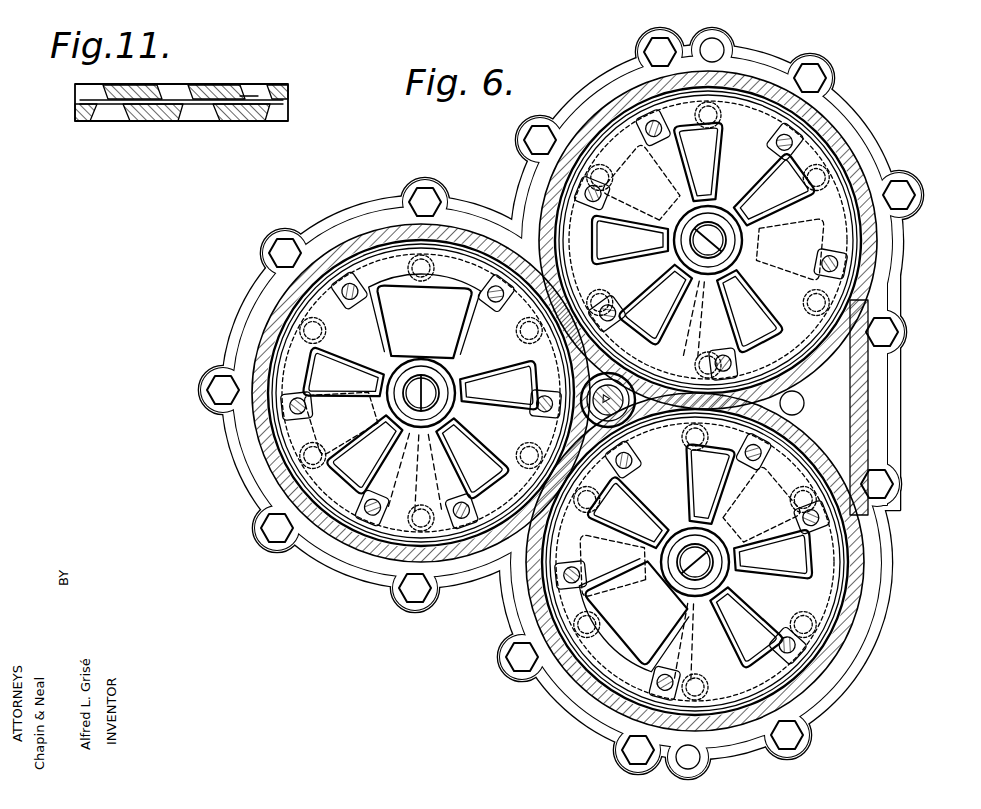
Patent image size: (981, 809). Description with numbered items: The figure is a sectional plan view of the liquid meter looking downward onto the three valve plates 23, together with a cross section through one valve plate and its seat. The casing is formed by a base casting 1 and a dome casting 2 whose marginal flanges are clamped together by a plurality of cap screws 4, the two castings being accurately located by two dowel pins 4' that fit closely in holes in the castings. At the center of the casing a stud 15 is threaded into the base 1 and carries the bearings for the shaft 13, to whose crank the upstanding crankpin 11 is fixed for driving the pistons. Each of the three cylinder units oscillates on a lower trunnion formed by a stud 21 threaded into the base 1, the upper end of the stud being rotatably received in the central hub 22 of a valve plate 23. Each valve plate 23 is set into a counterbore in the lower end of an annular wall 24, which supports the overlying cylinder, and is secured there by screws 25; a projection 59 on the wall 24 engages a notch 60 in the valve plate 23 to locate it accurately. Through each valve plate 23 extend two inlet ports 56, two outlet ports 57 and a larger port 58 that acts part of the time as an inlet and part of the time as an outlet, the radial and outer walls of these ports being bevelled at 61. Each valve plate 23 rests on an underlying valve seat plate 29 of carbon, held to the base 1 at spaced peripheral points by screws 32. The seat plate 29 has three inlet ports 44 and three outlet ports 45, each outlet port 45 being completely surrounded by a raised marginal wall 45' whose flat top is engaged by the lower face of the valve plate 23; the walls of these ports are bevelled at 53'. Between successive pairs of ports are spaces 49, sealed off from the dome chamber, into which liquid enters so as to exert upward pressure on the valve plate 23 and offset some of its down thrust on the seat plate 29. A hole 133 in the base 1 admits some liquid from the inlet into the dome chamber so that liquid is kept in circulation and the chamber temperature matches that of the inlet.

In FIG. 6, the base casting 1 is at (903, 380).
In FIG. 6, the dome casting 2 is at (860, 167).
In FIG. 6, the cap screws 4 is at (561, 408).
In FIG. 6, the dowel pins 4' is at (724, 409).
In FIG. 6, the crankpin 11 is at (362, 462).
In FIG. 6, the shaft 13 is at (624, 401).
In FIG. 6, the stud 15 is at (600, 383).
In FIG. 6, the stud 21 is at (416, 373).
In FIG. 6, the central hub 22 is at (423, 380).
In FIG. 11, the valve plate 23 is at (289, 97).
In FIG. 6, the valve plate 23 is at (838, 232).
In FIG. 6, the annular wall 24 is at (300, 440).
In FIG. 6, the screws 25 is at (822, 125).
In FIG. 11, the valve seat plate 29 is at (74, 118).
In FIG. 6, the screws 32 is at (445, 576).
In FIG. 6, the inlet ports 44 is at (660, 300).
In FIG. 11, the outlet ports 45 is at (202, 129).
In FIG. 6, the outlet ports 45 is at (506, 406).
In FIG. 11, the marginal wall 45' is at (170, 79).
In FIG. 11, the spaces 49 is at (160, 121).
In FIG. 11, the bevel 53' is at (178, 143).
In FIG. 6, the inlet ports 56 is at (681, 328).
In FIG. 11, the outlet ports 57 is at (101, 86).
In FIG. 6, the outlet ports 57 is at (756, 596).
In FIG. 6, the larger port 58 is at (574, 472).
In FIG. 6, the projection 59 is at (583, 123).
In FIG. 6, the notch 60 is at (776, 505).
In FIG. 11, the bevel 61 is at (256, 95).
In FIG. 6, the bevel 61 is at (424, 356).
In FIG. 6, the hole 133 is at (796, 398).